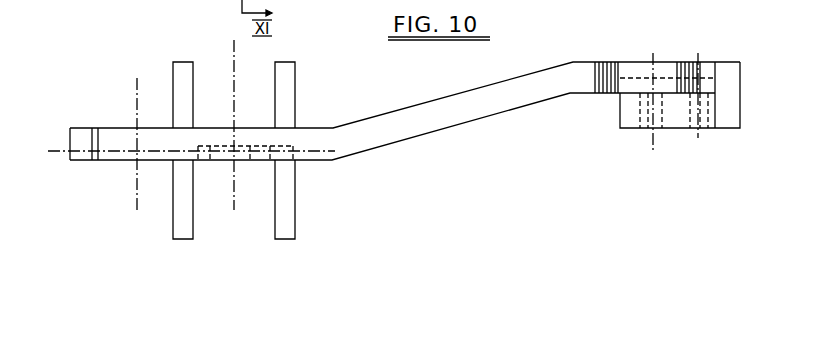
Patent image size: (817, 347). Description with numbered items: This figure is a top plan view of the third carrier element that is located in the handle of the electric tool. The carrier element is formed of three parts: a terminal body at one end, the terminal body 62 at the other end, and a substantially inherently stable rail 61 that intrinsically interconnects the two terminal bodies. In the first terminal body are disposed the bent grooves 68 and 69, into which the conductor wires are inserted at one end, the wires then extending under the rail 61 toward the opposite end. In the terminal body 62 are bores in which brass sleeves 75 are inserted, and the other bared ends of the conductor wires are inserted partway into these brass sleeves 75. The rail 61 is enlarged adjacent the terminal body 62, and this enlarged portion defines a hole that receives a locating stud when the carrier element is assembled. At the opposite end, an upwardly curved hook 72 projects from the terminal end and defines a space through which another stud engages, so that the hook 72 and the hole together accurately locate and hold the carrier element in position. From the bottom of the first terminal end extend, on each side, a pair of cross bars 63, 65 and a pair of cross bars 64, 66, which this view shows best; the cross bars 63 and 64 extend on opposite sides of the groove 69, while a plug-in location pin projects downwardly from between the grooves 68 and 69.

The rail 61 is at (484, 103).
The terminal body 62 is at (730, 112).
The cross bar 63 is at (287, 227).
The cross bar 64 is at (287, 72).
The cross bar 65 is at (180, 223).
The cross bar 66 is at (185, 73).
The bent groove 68 is at (262, 162).
The bent groove 69 is at (203, 162).
The upwardly curved hook 72 is at (82, 142).
The brass sleeve 75 is at (640, 110).